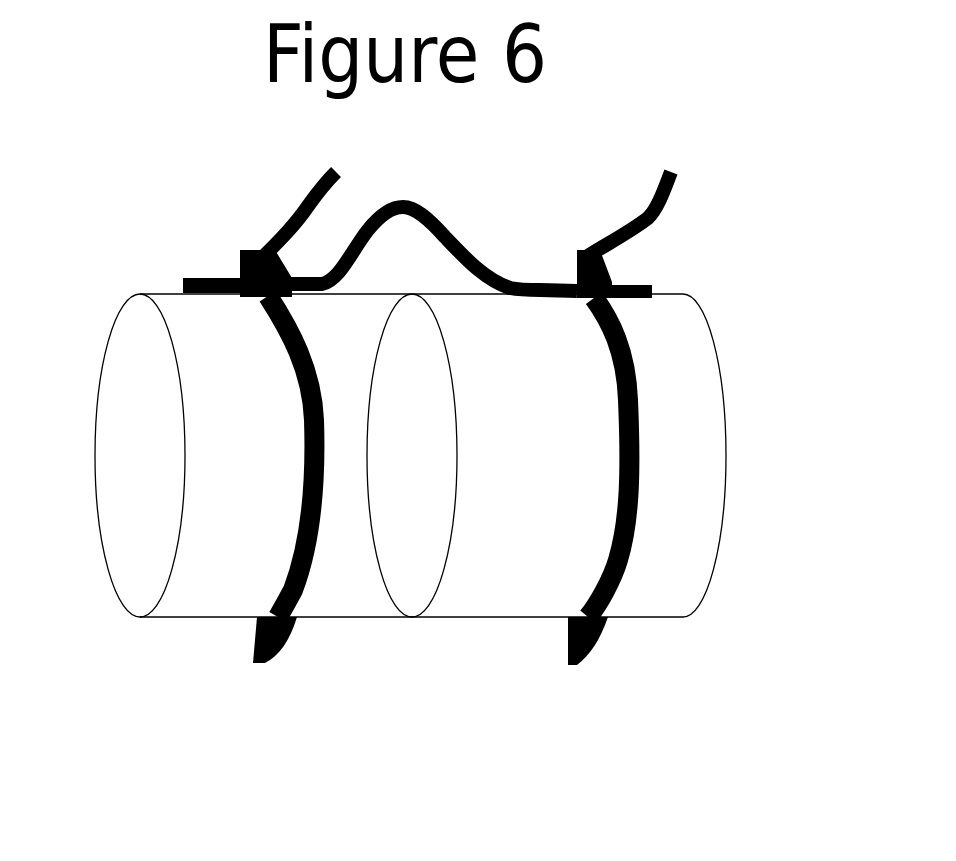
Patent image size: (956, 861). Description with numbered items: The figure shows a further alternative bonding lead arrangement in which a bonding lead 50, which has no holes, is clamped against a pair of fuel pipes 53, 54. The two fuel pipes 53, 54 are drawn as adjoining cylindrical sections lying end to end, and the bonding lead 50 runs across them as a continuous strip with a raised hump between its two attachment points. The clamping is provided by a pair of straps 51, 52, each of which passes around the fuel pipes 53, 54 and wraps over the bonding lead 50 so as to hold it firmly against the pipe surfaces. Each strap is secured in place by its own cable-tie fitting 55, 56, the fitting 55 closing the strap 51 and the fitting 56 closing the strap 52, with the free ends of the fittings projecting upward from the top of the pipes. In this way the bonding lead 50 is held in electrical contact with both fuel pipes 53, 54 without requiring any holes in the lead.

The bonding lead 50 is at (457, 220).
The strap 51 is at (307, 593).
The strap 52 is at (628, 550).
The fuel pipe 53 is at (213, 575).
The fuel pipe 54 is at (693, 435).
The cable-tie fitting 55 is at (240, 250).
The cable-tie fitting 56 is at (590, 250).